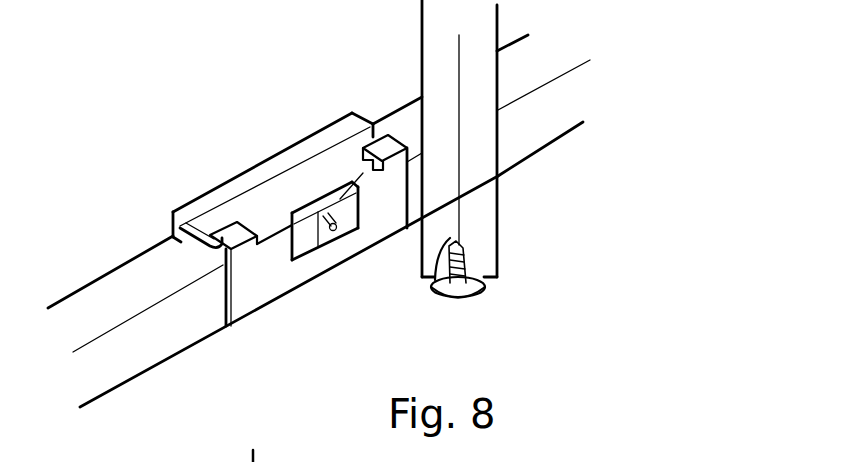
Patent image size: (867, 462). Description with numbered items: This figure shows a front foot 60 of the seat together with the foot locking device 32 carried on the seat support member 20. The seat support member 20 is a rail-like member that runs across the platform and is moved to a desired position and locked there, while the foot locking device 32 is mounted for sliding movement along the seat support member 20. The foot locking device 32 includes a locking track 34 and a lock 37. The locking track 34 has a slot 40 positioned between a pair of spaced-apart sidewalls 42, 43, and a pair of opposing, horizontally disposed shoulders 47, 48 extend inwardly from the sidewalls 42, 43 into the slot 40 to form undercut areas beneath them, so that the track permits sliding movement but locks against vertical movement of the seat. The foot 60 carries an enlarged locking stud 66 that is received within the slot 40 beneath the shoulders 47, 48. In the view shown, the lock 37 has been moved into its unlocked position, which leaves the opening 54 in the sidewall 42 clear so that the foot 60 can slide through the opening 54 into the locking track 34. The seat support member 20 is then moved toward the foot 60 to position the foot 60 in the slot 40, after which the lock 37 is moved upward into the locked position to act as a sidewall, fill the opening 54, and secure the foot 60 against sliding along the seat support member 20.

The seat support member 20 is at (123, 358).
The foot locking device 32 is at (245, 308).
The locking track 34 is at (193, 252).
The lock 37 is at (330, 236).
The slot 40 is at (153, 248).
The sidewall 42 is at (392, 167).
The sidewall 43 is at (173, 222).
The shoulder 47 is at (390, 142).
The shoulder 48 is at (292, 157).
The opening 54 is at (272, 222).
The foot 60 is at (487, 237).
The locking stud 66 is at (468, 297).